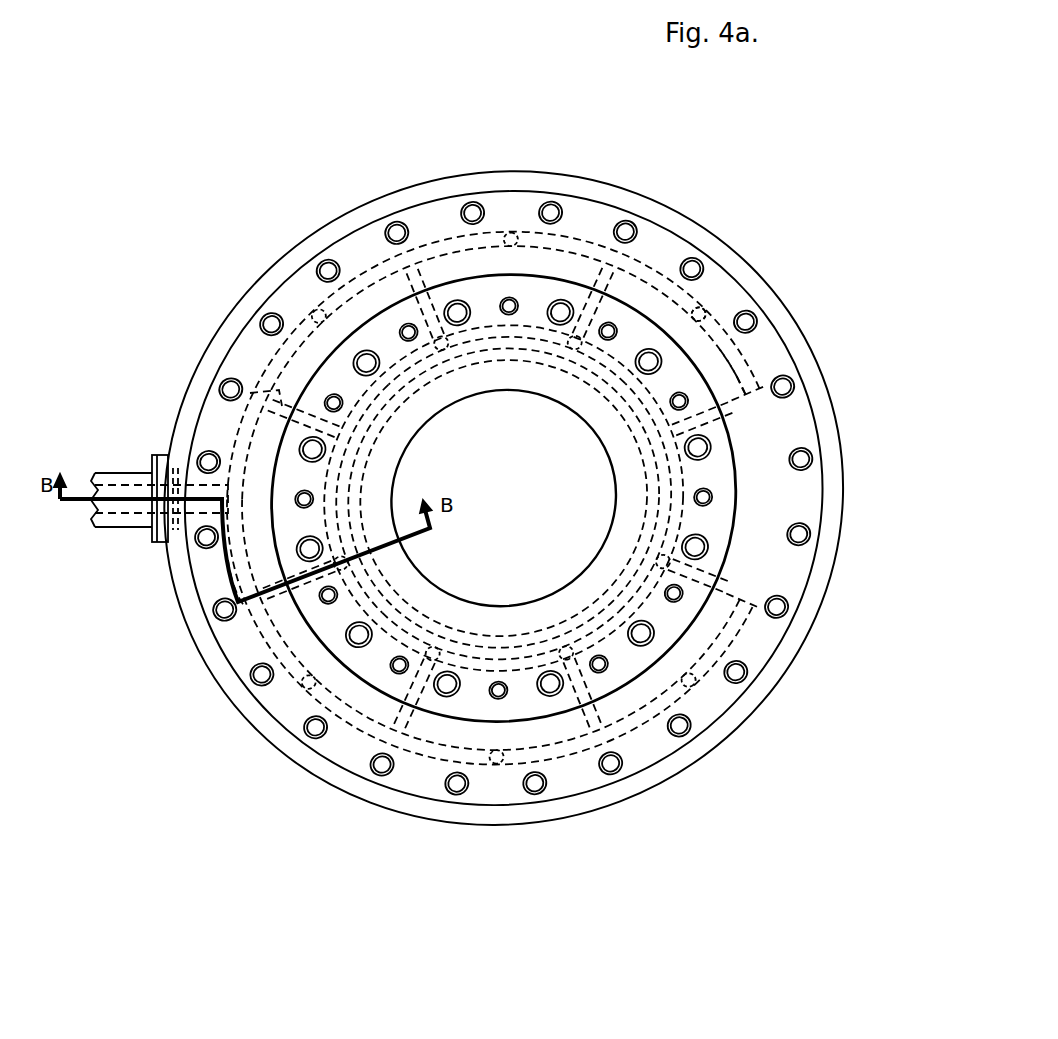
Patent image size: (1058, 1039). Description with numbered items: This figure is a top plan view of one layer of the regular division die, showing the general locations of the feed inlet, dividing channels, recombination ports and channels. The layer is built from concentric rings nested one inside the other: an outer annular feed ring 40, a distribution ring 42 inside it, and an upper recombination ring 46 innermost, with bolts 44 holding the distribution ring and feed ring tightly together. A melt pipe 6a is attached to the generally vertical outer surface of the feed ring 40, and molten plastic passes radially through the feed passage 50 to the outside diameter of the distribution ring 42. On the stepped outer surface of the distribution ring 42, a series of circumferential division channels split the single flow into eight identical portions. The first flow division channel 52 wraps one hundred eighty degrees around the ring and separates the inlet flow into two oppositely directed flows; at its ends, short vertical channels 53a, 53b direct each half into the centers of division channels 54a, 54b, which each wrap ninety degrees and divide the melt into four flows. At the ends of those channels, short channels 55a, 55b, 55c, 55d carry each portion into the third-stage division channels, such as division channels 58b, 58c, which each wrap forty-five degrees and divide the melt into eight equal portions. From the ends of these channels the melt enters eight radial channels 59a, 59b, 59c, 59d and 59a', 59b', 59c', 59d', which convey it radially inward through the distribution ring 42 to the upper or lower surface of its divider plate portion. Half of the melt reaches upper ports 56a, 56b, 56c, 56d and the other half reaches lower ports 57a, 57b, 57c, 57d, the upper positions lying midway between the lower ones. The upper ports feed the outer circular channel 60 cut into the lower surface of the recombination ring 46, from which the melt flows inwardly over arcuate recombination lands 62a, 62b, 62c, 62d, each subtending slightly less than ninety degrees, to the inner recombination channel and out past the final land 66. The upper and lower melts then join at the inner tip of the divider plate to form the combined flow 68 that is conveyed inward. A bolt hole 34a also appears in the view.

The melt pipe 6a is at (123, 480).
The bolt hole 34a is at (367, 362).
The feed ring 40 is at (377, 798).
The distribution ring 42 is at (417, 775).
The bolts 44 is at (263, 675).
The upper recombination ring 46 is at (527, 703).
The feed passage 50 is at (215, 497).
The flow division channel 52 is at (247, 563).
The short vertical channel 53a is at (493, 757).
The short vertical channel 53b is at (513, 240).
The division channel 54a is at (563, 753).
The division channel 54b is at (578, 247).
The short channel 55a is at (307, 683).
The short channel 55b is at (692, 682).
The short channel 55c is at (700, 312).
The short channel 55d is at (313, 317).
The upper port 56a is at (288, 640).
The upper port 56b is at (583, 693).
The upper port 56c is at (733, 407).
The upper port 56d is at (442, 343).
The lower port 57a is at (330, 690).
The lower port 57b is at (660, 562).
The lower port 57c is at (577, 341).
The lower port 57d is at (303, 418).
The division channel 58b is at (730, 630).
The division channel 58c is at (733, 357).
The radial channel 59a is at (247, 625).
The radial channel 59a' is at (323, 746).
The radial channel 59b is at (672, 748).
The radial channel 59b' is at (797, 584).
The radial channel 59c is at (832, 401).
The radial channel 59c' is at (698, 289).
The radial channel 59d is at (344, 241).
The radial channel 59d' is at (206, 358).
The outer circular channel 60 is at (375, 581).
The arcuate recombination land 62a is at (343, 523).
The arcuate recombination land 62b is at (543, 650).
The arcuate recombination land 62c is at (630, 487).
The arcuate recombination land 62d is at (430, 362).
The final land 66 is at (628, 413).
The combined flow 68 is at (630, 466).